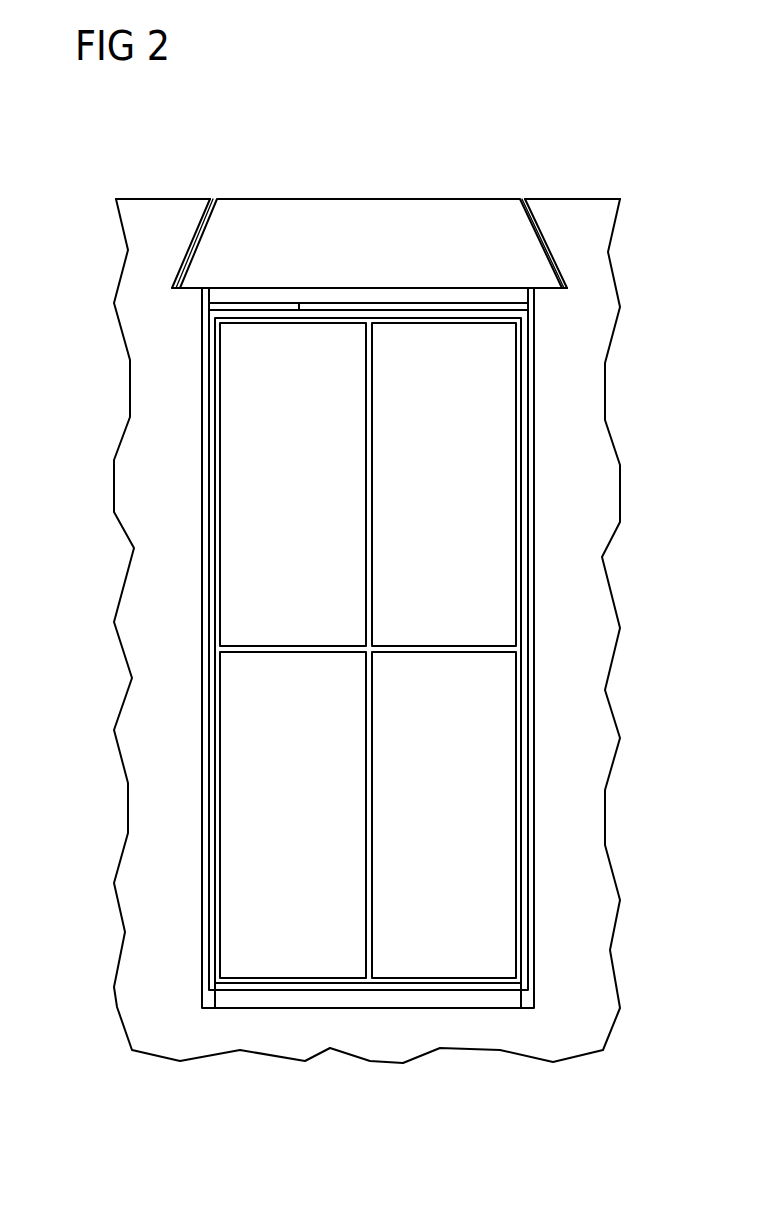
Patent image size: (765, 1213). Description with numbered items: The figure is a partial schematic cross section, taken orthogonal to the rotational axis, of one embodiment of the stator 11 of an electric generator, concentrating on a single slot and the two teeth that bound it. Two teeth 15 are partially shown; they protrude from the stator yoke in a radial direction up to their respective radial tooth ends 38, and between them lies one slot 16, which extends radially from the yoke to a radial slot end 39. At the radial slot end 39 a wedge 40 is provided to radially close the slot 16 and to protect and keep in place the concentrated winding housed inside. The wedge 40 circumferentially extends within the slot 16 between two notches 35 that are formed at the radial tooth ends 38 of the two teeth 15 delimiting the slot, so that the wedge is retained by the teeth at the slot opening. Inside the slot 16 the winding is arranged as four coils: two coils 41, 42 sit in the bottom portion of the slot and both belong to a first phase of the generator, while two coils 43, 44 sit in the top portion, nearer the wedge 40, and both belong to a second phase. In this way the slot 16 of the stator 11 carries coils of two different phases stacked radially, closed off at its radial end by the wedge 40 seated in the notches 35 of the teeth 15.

The stator 11 is at (462, 122).
The teeth 15 is at (145, 596).
The slot 16 is at (531, 493).
The notches 35 is at (198, 244).
The radial tooth ends 38 is at (180, 199).
The radial slot end 39 is at (524, 202).
The wedge 40 is at (365, 235).
The coil 41 is at (265, 828).
The coil 42 is at (465, 828).
The coil 43 is at (265, 452).
The coil 44 is at (465, 452).